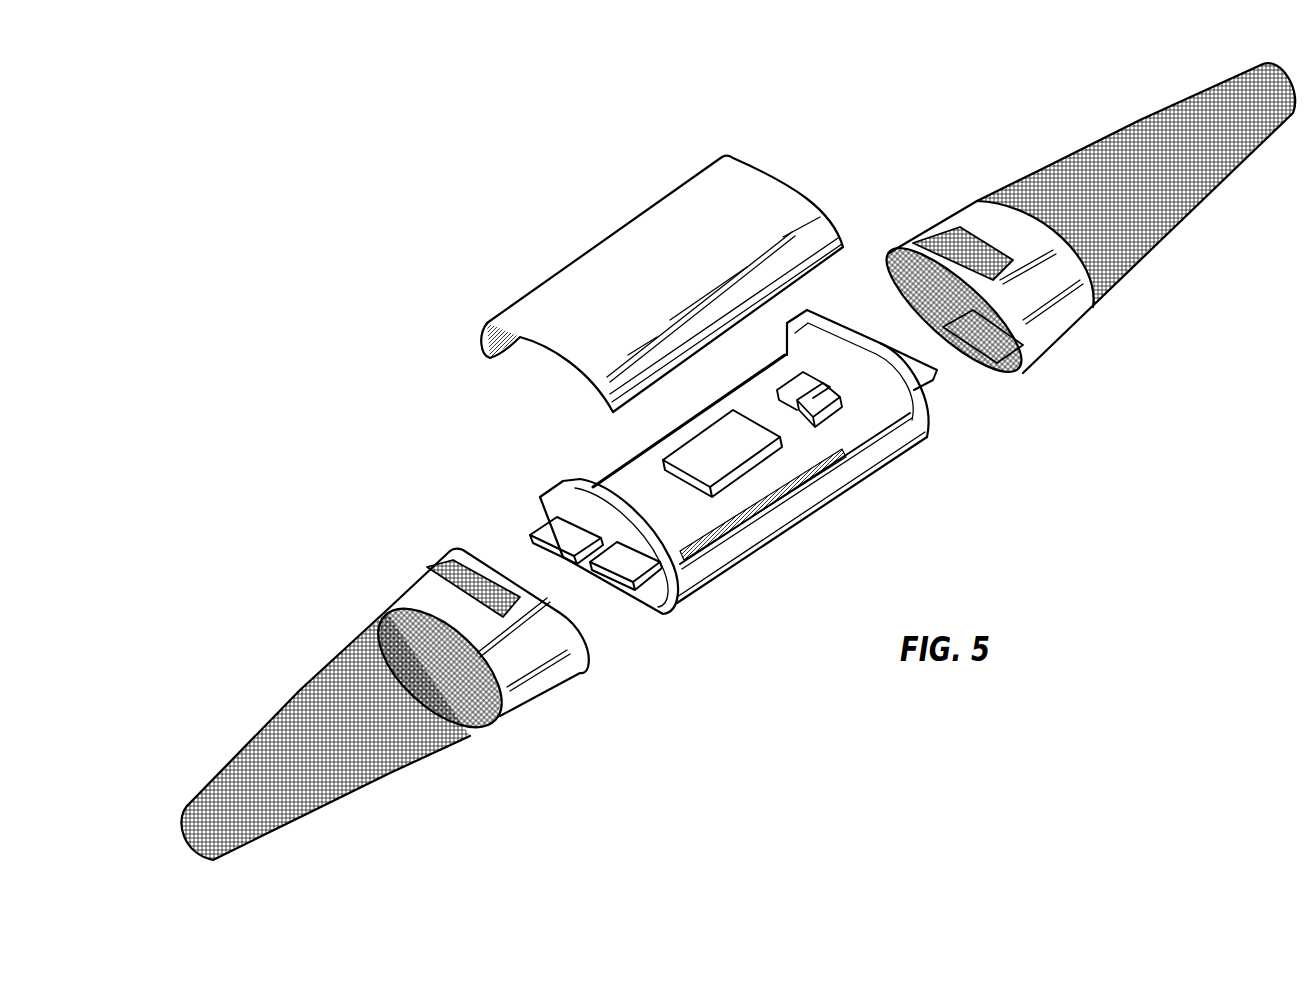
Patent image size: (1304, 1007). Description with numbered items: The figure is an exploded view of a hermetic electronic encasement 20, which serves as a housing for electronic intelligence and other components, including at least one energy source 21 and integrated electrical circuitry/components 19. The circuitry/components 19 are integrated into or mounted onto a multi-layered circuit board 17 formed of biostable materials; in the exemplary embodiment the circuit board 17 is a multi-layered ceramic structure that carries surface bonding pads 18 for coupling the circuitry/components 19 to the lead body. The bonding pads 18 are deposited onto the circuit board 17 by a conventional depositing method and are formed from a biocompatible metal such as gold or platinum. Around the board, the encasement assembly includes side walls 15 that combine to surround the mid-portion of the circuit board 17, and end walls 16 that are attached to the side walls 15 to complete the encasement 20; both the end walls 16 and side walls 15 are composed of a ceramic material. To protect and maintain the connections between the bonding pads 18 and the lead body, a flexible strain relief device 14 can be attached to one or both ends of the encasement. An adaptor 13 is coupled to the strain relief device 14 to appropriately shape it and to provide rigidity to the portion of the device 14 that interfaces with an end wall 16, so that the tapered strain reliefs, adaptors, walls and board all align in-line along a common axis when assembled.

The adaptor 13 is at (420, 582).
The flexible strain relief device 14 is at (287, 700).
The side walls 15 is at (478, 330).
The end walls 16 is at (545, 492).
The multi-layered circuit board 17 is at (683, 517).
The surface bonding pads 18 is at (553, 530).
The integrated electrical circuitry/components 19 is at (717, 453).
The hermetic electronic encasement 20 is at (865, 160).
The energy source 21 is at (827, 467).